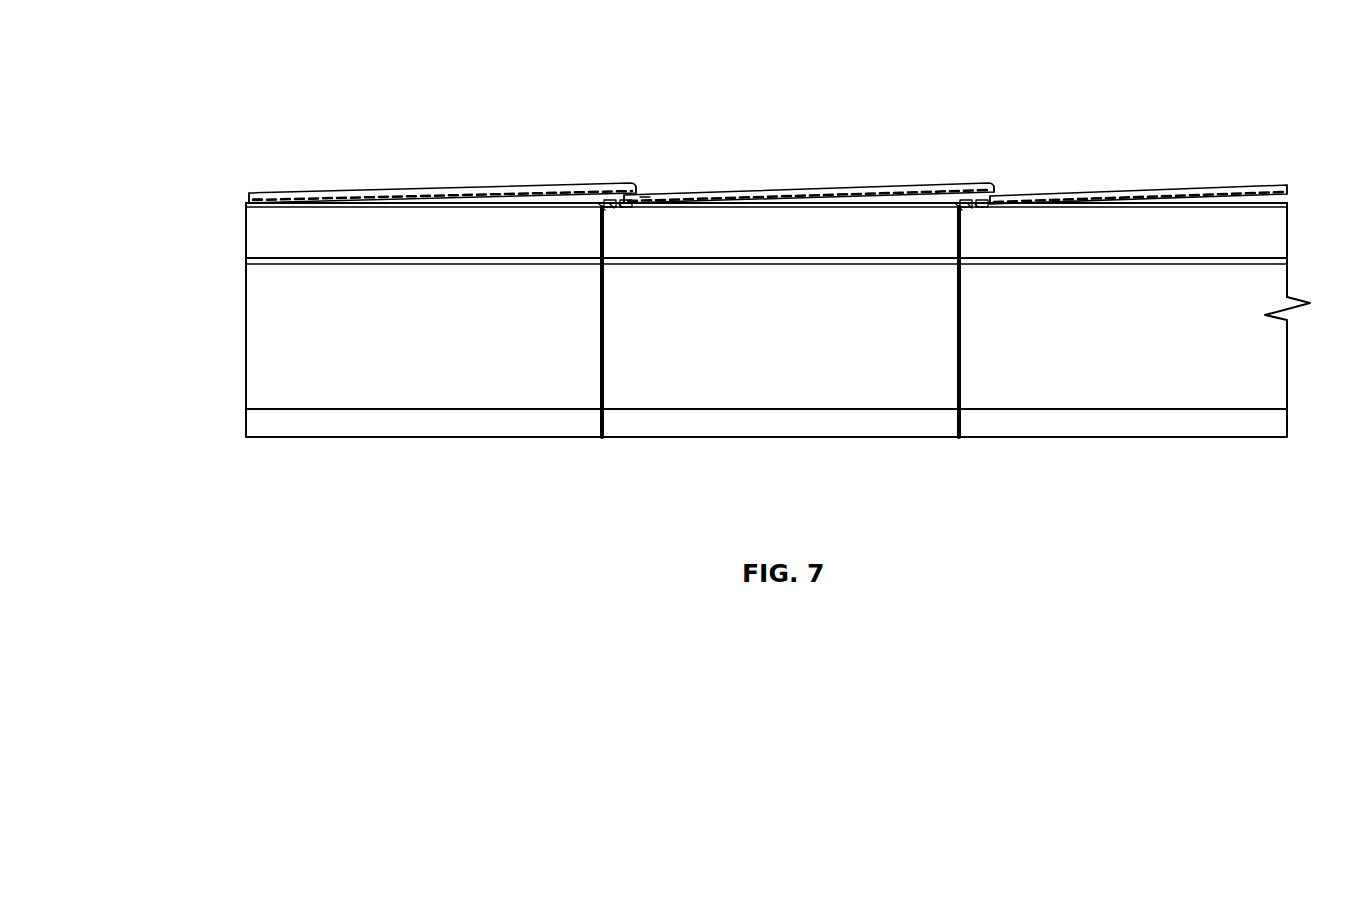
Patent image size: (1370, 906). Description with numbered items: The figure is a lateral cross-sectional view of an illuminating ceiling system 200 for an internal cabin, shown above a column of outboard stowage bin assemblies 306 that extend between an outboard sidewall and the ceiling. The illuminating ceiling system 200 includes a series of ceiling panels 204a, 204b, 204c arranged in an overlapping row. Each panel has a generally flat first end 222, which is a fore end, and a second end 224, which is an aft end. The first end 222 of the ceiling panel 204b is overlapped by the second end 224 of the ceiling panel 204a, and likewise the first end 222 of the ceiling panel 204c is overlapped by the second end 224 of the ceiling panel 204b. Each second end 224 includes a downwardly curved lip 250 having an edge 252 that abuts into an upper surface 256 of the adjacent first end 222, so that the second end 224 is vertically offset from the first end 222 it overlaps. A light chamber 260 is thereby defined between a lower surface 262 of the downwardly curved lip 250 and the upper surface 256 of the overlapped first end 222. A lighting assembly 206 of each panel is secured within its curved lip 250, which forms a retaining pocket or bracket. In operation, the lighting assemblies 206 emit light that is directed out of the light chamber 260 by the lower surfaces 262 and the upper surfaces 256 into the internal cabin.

The illuminating ceiling system 200 is at (230, 168).
The ceiling panel 204a is at (435, 184).
The ceiling panel 204b is at (795, 183).
The ceiling panel 204c is at (1167, 182).
The lighting assembly 206 is at (620, 207).
The first end 222 is at (258, 193).
The second end 224 is at (627, 184).
The downwardly curved lip 250 is at (637, 190).
The edge 252 is at (650, 207).
The upper surface 256 is at (270, 196).
The light chamber 260 is at (600, 206).
The lower surface 262 is at (612, 207).
The outboard stowage bin assemblies 306 is at (308, 380).